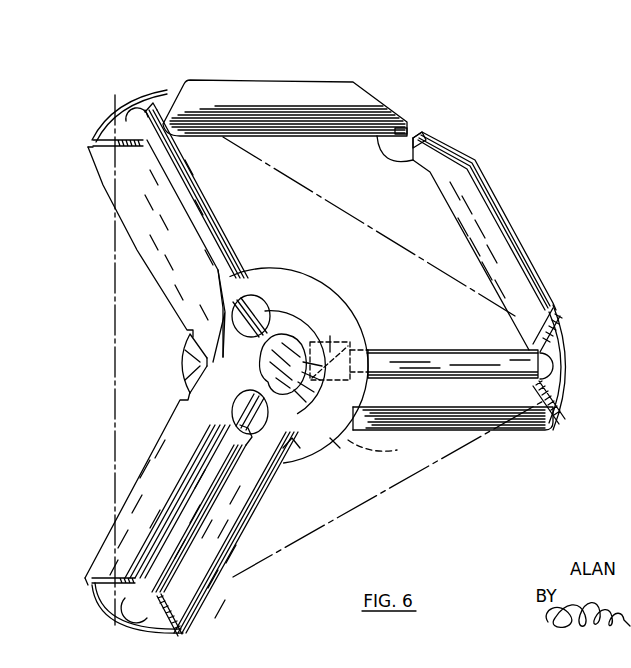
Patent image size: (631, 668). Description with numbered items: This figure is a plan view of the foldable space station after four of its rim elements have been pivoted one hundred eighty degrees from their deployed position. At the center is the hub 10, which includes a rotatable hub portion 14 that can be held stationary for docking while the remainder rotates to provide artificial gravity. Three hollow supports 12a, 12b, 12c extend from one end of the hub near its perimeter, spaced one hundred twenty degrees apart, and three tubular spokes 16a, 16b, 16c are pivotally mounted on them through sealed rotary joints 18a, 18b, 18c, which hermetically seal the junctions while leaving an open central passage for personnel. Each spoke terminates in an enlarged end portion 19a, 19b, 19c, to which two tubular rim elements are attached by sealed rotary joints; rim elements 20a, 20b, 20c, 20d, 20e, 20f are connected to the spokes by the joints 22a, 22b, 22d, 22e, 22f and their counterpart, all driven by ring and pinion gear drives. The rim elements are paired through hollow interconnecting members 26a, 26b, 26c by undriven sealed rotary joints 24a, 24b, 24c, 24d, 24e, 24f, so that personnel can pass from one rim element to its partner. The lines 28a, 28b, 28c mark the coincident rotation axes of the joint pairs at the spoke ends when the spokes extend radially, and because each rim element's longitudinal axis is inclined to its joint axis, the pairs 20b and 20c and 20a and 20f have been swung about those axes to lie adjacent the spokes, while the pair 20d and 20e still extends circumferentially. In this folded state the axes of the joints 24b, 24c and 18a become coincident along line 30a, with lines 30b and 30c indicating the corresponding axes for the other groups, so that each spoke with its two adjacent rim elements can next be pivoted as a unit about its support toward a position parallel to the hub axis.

The hub 10 is at (343, 291).
The support 12a is at (249, 400).
The support 12b is at (253, 287).
The support 12c is at (363, 380).
The rotatable hub portion 14 is at (282, 322).
The tubular spoke 16a is at (232, 478).
The tubular spoke 16b is at (180, 178).
The tubular spoke 16c is at (421, 358).
The rotary joint 18a is at (250, 428).
The rotary joint 18b is at (247, 326).
The rotary joint 18c is at (331, 347).
The enlarged end portion 19a is at (128, 610).
The enlarged end portion 19b is at (135, 110).
The enlarged end portion 19c is at (568, 370).
The tubular rim element 20a is at (202, 608).
The tubular rim element 20b is at (141, 470).
The tubular rim element 20c is at (148, 268).
The tubular rim element 20d is at (301, 80).
The tubular rim element 20e is at (500, 227).
The tubular rim element 20f is at (537, 406).
The sealed rotary joint 22a is at (196, 634).
The sealed rotary joint 22b is at (92, 584).
The sealed rotary joint 22d is at (165, 118).
The sealed rotary joint 22e is at (557, 313).
The sealed rotary joint 22f is at (562, 419).
The sealed rotary joint 24a is at (388, 449).
The sealed rotary joint 24b is at (308, 463).
The sealed rotary joint 24c is at (185, 384).
The sealed rotary joint 24d is at (185, 350).
The sealed rotary joint 24e is at (394, 128).
The sealed rotary joint 24f is at (422, 136).
The hollow interconnecting member 26a is at (335, 446).
The hollow interconnecting member 26b is at (185, 373).
The hollow interconnecting member 26c is at (393, 152).
The line 28a is at (362, 503).
The line 28b is at (113, 400).
The line 28c is at (353, 217).
The line 30a is at (212, 395).
The line 30b is at (243, 323).
The line 30c is at (355, 338).